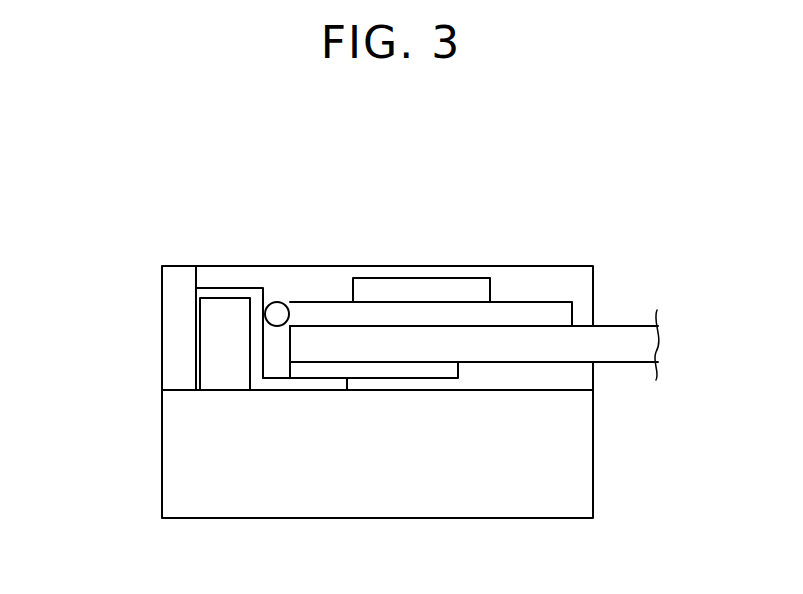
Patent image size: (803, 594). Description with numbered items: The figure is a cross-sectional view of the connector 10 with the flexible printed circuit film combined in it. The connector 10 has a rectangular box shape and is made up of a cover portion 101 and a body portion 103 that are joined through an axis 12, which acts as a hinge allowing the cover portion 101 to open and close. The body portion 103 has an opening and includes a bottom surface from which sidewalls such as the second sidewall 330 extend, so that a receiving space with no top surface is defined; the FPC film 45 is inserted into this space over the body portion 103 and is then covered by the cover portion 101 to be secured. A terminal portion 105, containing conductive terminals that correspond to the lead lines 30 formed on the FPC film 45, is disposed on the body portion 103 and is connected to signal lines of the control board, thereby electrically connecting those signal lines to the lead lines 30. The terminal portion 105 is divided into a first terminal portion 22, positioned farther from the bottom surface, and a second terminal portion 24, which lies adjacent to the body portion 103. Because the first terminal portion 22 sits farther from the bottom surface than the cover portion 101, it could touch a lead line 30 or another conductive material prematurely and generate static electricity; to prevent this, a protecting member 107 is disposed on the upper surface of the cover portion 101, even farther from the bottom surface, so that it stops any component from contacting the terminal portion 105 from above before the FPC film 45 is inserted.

The connector 10 is at (617, 466).
The axis 12 is at (278, 312).
The first terminal portion 22 is at (205, 298).
The second terminal portion 24 is at (275, 385).
The lead line 30 is at (460, 368).
The FPC film 45 is at (625, 342).
The cover portion 101 is at (524, 312).
The body portion 103 is at (457, 494).
The terminal portion 105 is at (151, 343).
The protecting member 107 is at (422, 284).
The second sidewall 330 is at (239, 275).